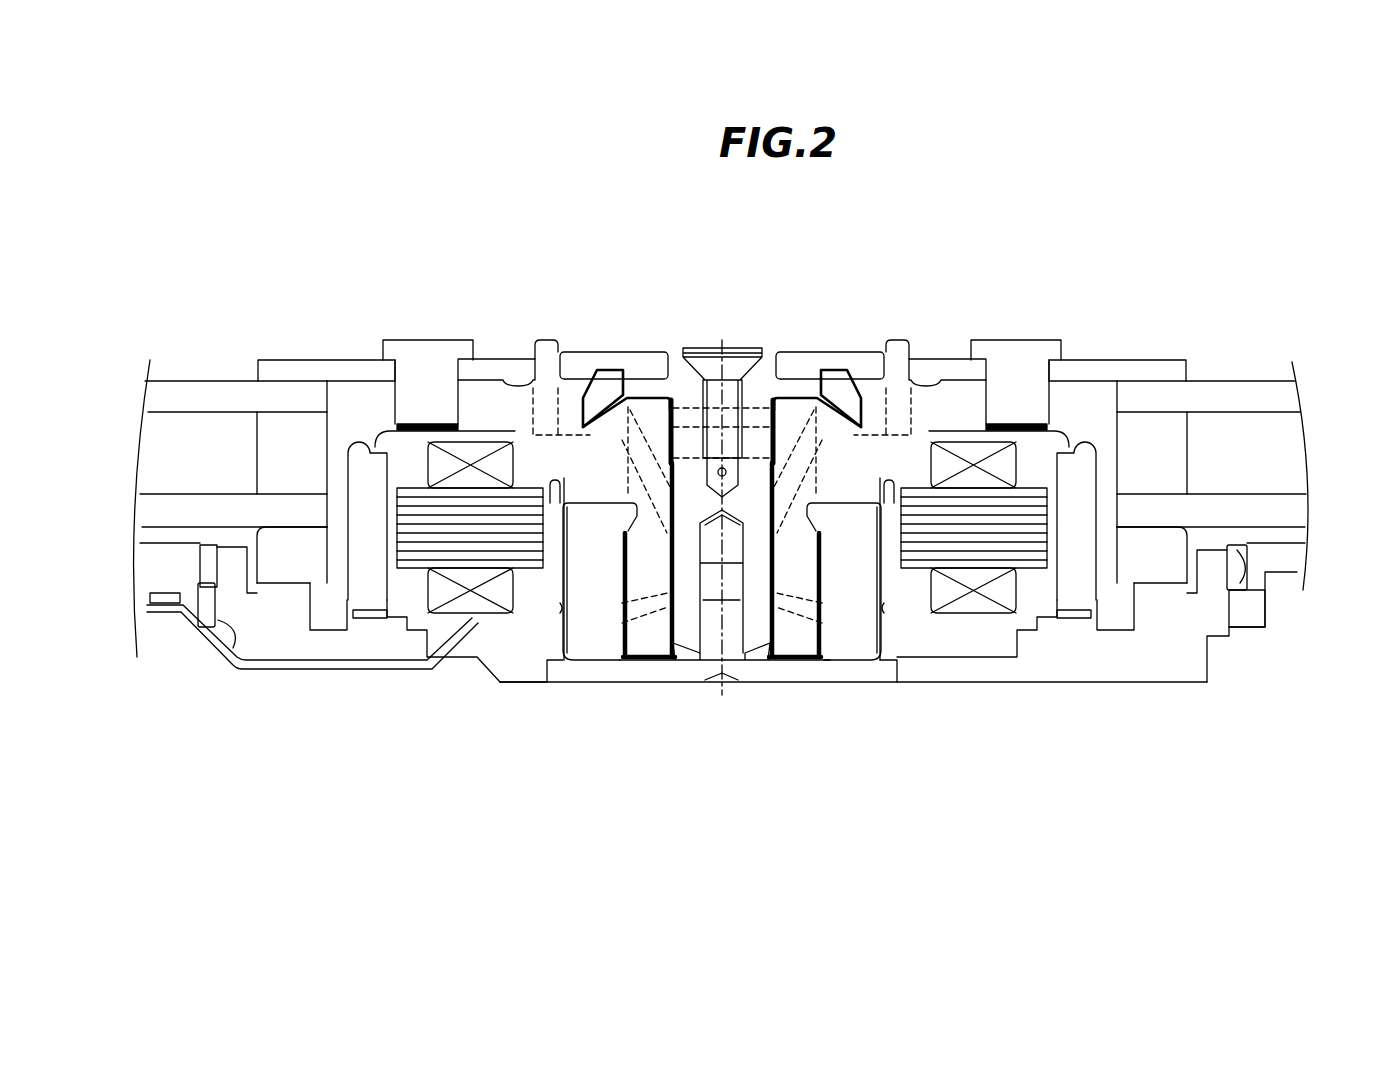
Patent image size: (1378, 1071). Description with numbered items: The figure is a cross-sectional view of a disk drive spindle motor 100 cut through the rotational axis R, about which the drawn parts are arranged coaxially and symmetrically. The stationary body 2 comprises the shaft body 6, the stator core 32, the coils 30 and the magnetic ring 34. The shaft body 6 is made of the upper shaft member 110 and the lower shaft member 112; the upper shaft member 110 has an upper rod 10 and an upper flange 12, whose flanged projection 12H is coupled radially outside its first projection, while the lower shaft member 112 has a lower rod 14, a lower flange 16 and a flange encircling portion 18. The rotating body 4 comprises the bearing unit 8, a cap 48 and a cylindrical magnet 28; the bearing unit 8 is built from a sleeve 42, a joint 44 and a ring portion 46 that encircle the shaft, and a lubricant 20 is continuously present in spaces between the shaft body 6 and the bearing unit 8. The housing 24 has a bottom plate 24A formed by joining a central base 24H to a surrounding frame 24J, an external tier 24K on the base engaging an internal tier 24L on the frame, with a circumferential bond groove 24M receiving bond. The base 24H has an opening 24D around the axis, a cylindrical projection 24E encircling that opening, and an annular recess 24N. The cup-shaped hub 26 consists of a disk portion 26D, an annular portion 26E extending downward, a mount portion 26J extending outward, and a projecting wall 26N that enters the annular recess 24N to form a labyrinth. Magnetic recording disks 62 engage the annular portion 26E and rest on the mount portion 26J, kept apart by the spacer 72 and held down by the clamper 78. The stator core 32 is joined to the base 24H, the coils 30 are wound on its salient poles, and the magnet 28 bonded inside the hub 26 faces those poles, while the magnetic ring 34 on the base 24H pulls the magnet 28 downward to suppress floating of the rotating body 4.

The stationary body 2 is at (933, 670).
The rotating body 4 is at (858, 460).
The shaft body 6 is at (753, 668).
The bearing unit 8 is at (800, 435).
The upper rod 10 is at (752, 380).
The upper flange 12 is at (658, 390).
The flanged projection 12H is at (832, 390).
The lower rod 14 is at (732, 602).
The lower flange 16 is at (798, 668).
The flange encircling portion 18 is at (852, 622).
The lubricant 20 is at (670, 550).
The case 24 is at (275, 648).
The bottom plate 24A is at (390, 630).
The opening 24D is at (562, 603).
The cylindrical projection 24E is at (557, 495).
The base 24H is at (222, 635).
The frame 24J is at (150, 565).
The external tier 24K is at (207, 650).
The internal tier 24L is at (197, 568).
The bond groove 24M is at (232, 590).
The annular recess 24N is at (338, 637).
The hub 26 is at (363, 403).
The disk portion 26D is at (468, 390).
The annular portion 26E is at (337, 443).
The mount portion 26J is at (290, 540).
The projecting wall 26N is at (323, 630).
The magnet 28 is at (1080, 473).
The coil 30 is at (990, 602).
The stator core 32 is at (1037, 552).
The magnetic ring 34 is at (1080, 620).
The sleeve 42 is at (645, 410).
The joint 44 is at (603, 447).
The ring portion 46 is at (573, 380).
The cap 48 is at (787, 362).
The magnetic recording disk 62 is at (150, 397).
The spacer 72 is at (265, 462).
The clamper 78 is at (310, 363).
The motor 100 is at (452, 760).
The upper shaft member 110 is at (680, 385).
The lower shaft member 112 is at (680, 670).
The rotational axis R is at (723, 500).